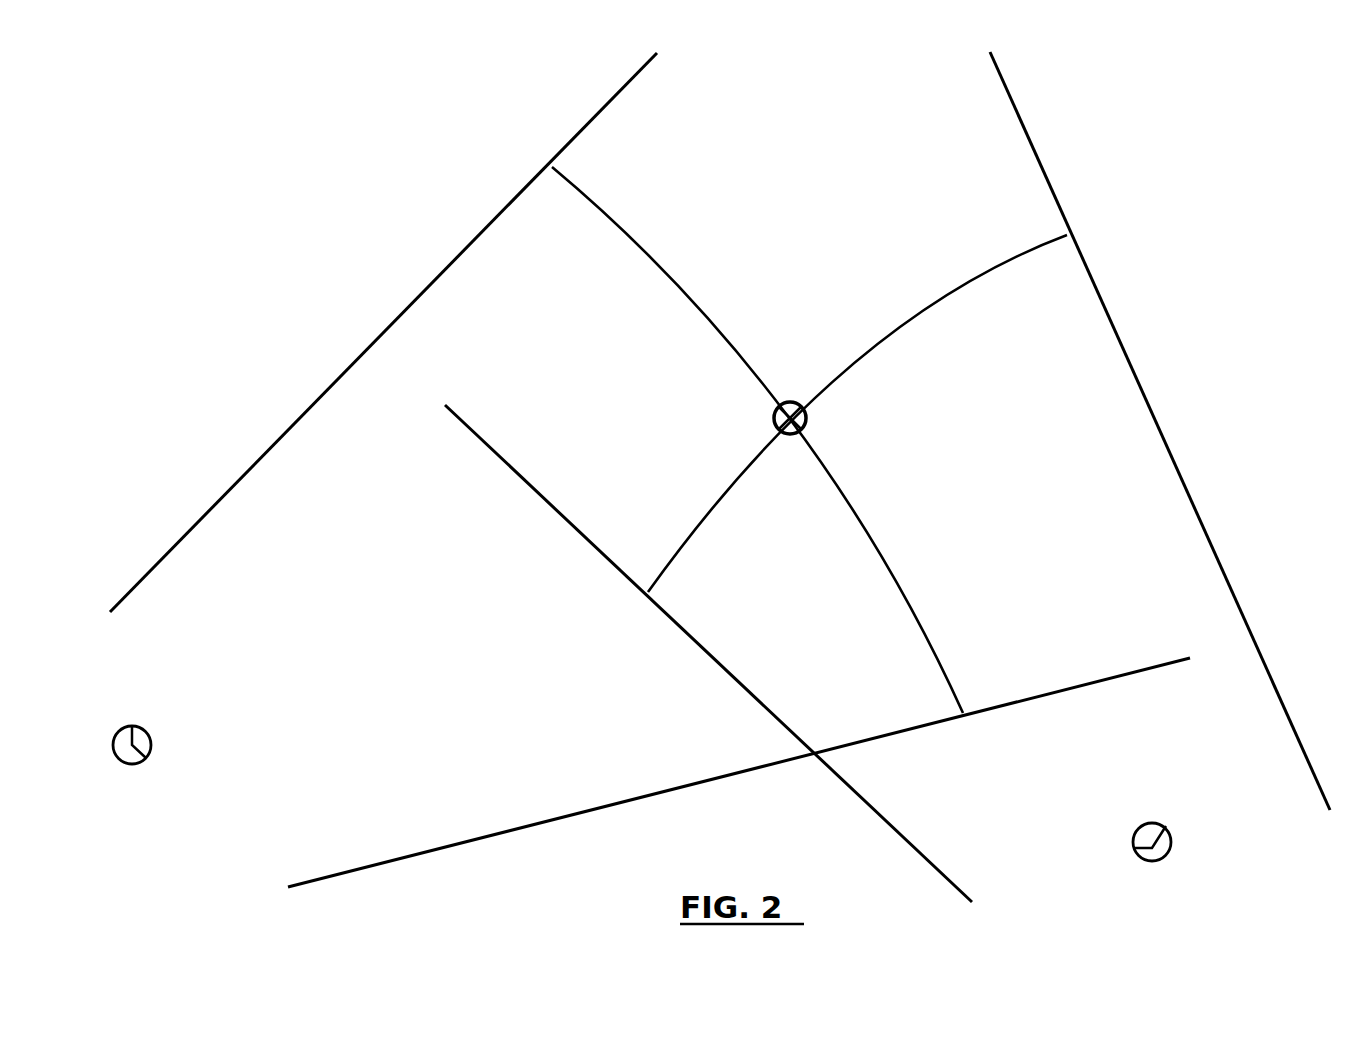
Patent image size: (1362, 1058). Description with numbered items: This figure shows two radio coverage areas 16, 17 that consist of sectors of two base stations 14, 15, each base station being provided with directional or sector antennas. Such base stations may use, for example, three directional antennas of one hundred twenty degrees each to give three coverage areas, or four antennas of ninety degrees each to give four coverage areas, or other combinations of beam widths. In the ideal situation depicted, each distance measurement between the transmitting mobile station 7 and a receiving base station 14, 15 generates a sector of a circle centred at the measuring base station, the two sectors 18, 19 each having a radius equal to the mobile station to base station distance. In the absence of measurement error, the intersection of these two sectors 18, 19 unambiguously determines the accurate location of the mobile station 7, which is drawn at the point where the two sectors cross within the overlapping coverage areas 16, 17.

The mobile station 7 is at (800, 402).
The base station 14 is at (151, 745).
The base station 15 is at (1171, 842).
The radio coverage area 16 is at (318, 515).
The radio coverage area 17 is at (1105, 482).
The sector of a circle 18 is at (580, 192).
The sector of a circle 19 is at (1010, 255).